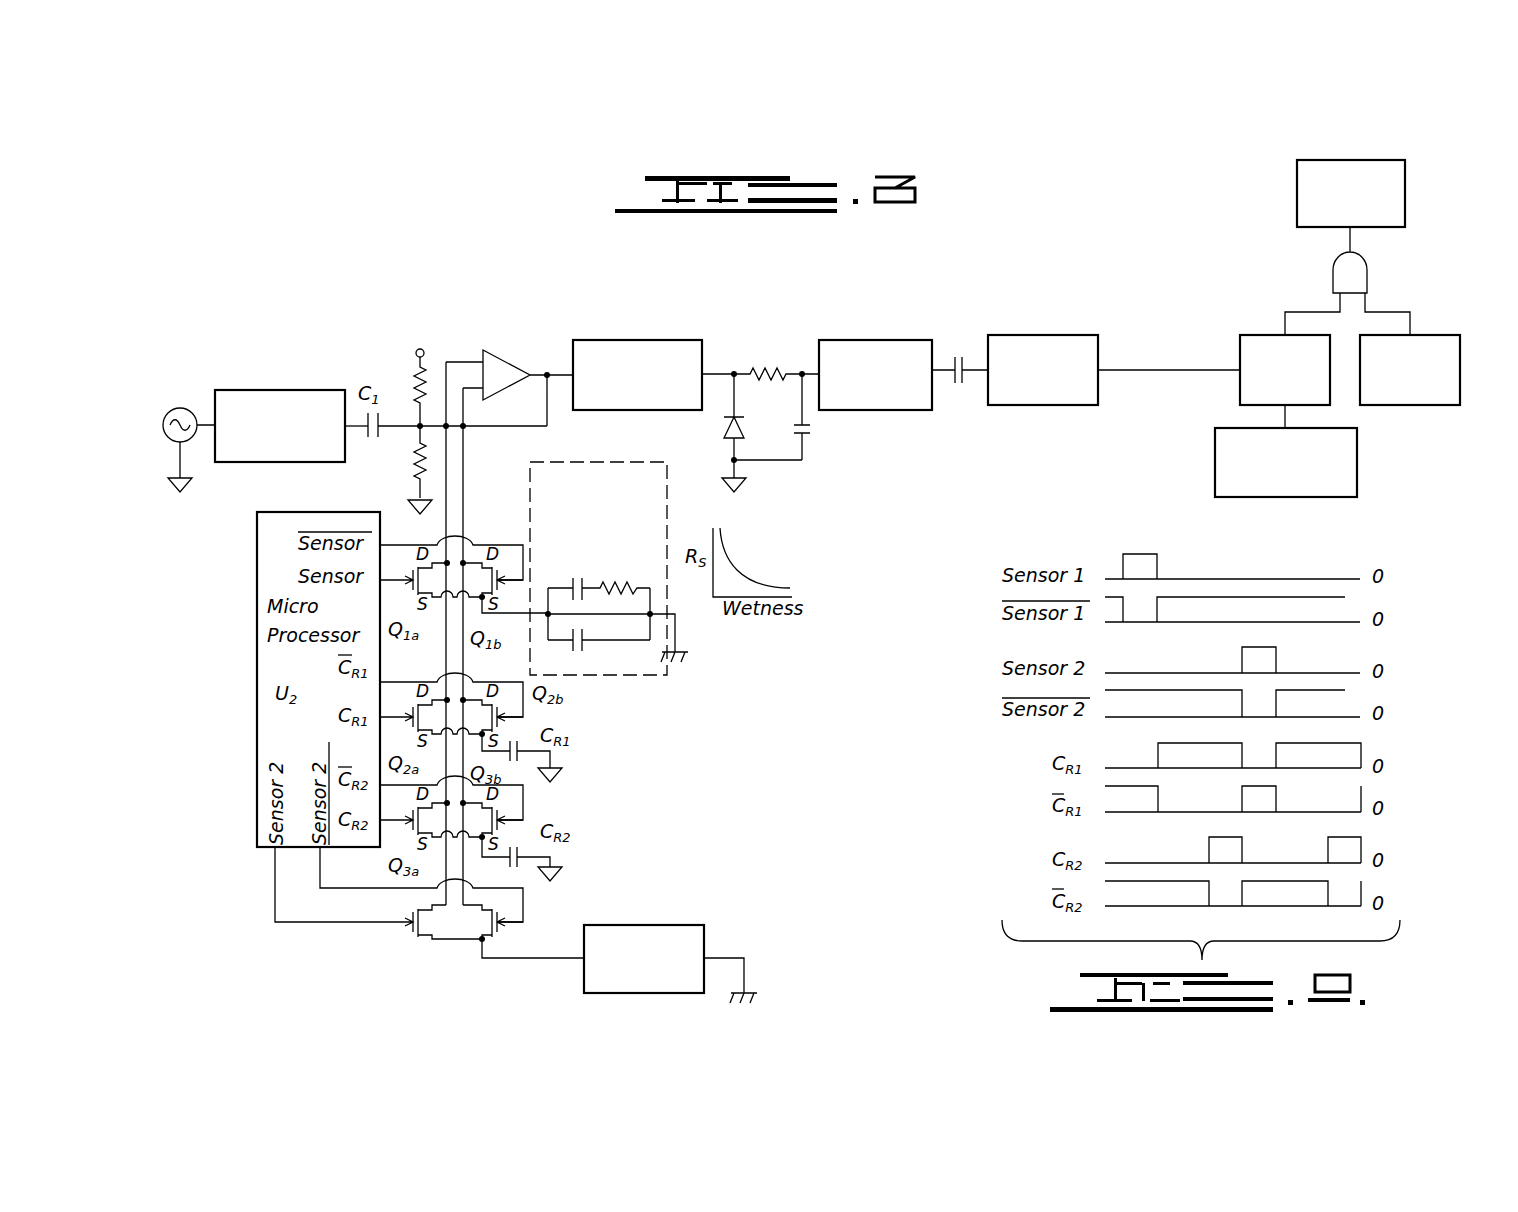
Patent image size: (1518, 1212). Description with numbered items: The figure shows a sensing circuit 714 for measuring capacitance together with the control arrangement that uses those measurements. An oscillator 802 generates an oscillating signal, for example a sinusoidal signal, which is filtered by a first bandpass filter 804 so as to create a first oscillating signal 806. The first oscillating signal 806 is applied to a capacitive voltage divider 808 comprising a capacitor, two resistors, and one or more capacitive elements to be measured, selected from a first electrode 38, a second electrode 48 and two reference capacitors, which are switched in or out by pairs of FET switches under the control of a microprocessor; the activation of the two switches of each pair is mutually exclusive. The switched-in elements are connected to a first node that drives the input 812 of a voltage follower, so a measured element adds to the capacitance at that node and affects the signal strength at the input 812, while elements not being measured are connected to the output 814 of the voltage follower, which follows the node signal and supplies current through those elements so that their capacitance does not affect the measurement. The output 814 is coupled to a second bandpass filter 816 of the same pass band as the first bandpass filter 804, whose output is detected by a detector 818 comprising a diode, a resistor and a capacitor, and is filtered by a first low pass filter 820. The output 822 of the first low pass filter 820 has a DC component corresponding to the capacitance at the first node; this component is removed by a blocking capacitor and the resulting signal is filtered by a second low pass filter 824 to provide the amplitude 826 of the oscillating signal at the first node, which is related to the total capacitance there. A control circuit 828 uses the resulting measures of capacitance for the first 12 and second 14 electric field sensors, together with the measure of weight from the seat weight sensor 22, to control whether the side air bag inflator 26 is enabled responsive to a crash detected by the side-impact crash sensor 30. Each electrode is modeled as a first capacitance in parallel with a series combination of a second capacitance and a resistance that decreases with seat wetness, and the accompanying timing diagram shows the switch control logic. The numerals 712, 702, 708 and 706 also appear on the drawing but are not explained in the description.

The signal source / oscillator 712 is at (206, 408).
The oscillator 802 is at (181, 407).
The first bandpass filter 804 is at (297, 390).
The first oscillating signal 806 is at (355, 432).
The voltage divider resistors R1 R2 702 is at (379, 391).
The capacitive voltage divider 808 is at (397, 342).
The sensing circuit 714 is at (447, 280).
The input of voltage follower U1 812 is at (473, 352).
The output of voltage follower U1 814 is at (535, 367).
The second bandpass filter 816 is at (680, 340).
The rectifier detector circuit 708 is at (767, 366).
The detector 818 is at (738, 368).
The first low pass filter 820 is at (883, 410).
The output of the first low pass filter 822 is at (960, 352).
The second low pass filter 824 is at (1040, 405).
The amplitude 826 is at (1188, 371).
The control circuit 828 is at (1253, 337).
The side air bag inflator 26 is at (1297, 193).
The side-impact crash sensor 30 is at (1440, 337).
The seat weight sensor 22 is at (1357, 467).
The first electric field sensor 12 is at (634, 600).
The first electrode 38 is at (642, 692).
The second electric field sensor 14 is at (619, 939).
The second electrode 48 is at (672, 925).
The transistor switch pair Q4a Q4b 706 is at (455, 955).